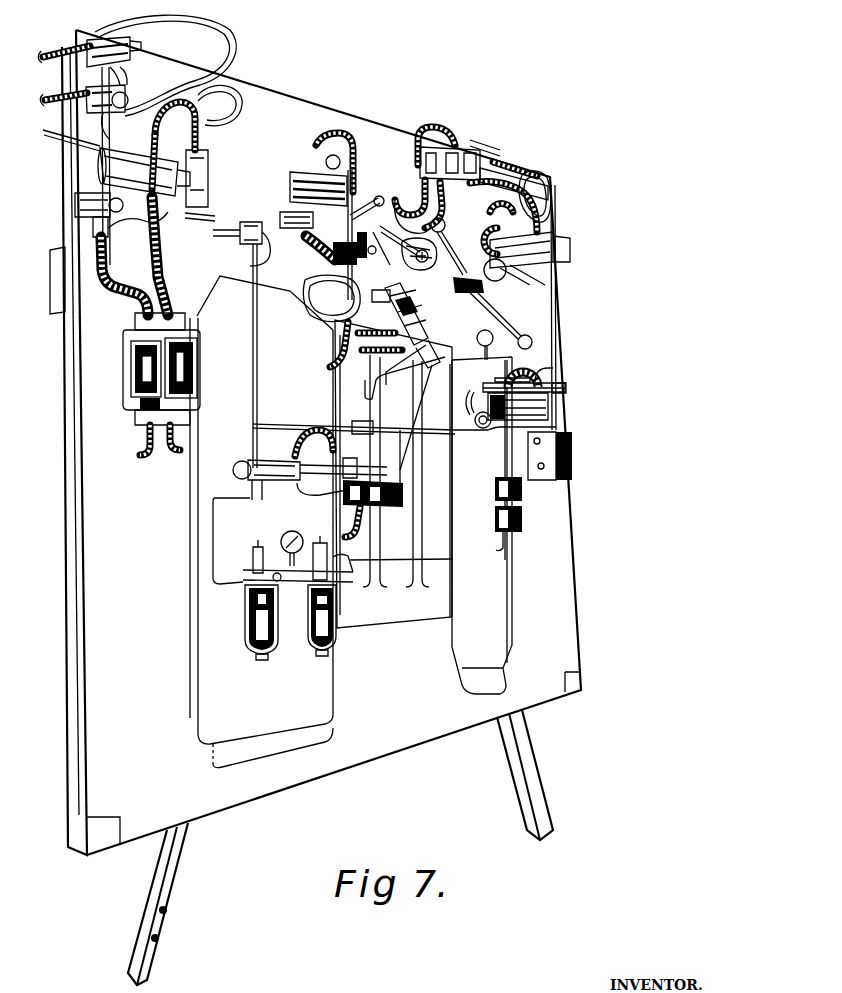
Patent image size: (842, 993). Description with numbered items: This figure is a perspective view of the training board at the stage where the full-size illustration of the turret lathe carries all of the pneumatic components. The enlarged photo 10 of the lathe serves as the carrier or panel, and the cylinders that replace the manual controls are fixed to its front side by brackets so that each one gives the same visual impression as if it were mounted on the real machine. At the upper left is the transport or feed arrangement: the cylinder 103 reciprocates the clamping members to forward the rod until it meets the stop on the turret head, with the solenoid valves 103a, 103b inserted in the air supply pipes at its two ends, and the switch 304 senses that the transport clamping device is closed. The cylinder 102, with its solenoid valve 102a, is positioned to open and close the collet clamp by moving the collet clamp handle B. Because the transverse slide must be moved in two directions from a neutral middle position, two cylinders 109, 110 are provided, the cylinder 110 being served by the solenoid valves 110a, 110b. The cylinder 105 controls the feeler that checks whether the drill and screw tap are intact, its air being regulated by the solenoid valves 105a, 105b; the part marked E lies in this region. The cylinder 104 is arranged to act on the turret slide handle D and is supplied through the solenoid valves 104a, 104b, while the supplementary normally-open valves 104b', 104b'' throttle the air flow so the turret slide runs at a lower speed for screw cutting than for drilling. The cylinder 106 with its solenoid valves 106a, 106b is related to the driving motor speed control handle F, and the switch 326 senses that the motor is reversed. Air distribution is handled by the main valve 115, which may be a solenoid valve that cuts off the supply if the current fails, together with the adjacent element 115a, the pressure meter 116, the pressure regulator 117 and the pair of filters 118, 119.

The photo 10 is at (232, 797).
The cylinder 103 is at (160, 172).
The solenoid valve 103a is at (168, 64).
The solenoid valve 103b is at (96, 117).
The collet clamp handle B is at (218, 176).
The switch 304 is at (205, 224).
The cylinder 102 is at (318, 175).
The solenoid valve 102a is at (316, 258).
The solenoid valve 110a is at (305, 282).
The solenoid valve 110b is at (320, 334).
The cylinder 110 is at (425, 290).
The cylinder 105 is at (416, 162).
The solenoid valve 105a is at (440, 192).
The solenoid valve 105b is at (455, 216).
The indicator E is at (432, 264).
The cylinder 109 is at (470, 342).
The turret slide handle D is at (508, 322).
The driving motor speed control handle F is at (517, 358).
The cylinder 104 is at (540, 268).
The solenoid valve 104a is at (562, 195).
The solenoid valve 104b is at (503, 175).
The supplementary valve 104b' is at (542, 178).
The supplementary valve 104b'' is at (539, 172).
The cylinder 106 is at (508, 370).
The solenoid valve 106a is at (570, 388).
The solenoid valve 106b is at (566, 425).
The main valve 115 is at (236, 470).
The valve hose 115a is at (285, 460).
The switch 326 is at (393, 505).
The pressure meter 116 is at (314, 516).
The pressure regulator 117 is at (286, 585).
The filter 118 is at (258, 664).
The filter 119 is at (322, 660).